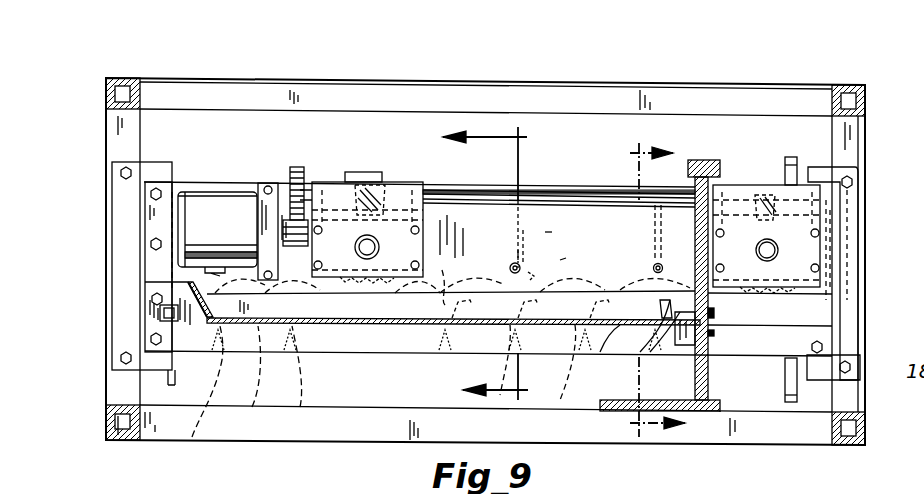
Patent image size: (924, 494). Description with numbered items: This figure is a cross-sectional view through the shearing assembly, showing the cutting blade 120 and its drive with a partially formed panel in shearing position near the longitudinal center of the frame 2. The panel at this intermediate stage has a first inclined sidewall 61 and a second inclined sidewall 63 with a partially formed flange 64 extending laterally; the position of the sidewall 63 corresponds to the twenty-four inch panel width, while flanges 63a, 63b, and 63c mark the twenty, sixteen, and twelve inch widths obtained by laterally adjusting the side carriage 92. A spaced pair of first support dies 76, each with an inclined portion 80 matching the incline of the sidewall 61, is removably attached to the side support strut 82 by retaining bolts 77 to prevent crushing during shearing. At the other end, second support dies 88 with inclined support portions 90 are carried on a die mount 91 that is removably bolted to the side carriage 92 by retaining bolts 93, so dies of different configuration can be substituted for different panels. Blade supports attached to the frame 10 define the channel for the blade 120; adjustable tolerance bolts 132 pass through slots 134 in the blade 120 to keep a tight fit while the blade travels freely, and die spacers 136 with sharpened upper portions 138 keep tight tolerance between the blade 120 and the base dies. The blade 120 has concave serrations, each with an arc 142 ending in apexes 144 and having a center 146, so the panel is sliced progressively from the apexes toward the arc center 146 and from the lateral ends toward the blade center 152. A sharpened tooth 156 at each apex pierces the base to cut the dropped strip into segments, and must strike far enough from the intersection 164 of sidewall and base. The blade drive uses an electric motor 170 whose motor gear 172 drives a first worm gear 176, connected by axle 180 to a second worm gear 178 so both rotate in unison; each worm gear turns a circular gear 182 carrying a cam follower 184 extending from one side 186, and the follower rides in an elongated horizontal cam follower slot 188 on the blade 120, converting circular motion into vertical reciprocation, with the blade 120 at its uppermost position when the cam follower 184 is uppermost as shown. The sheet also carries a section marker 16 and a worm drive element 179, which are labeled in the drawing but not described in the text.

The frame 2 is at (832, 167).
The frame 10 is at (467, 263).
The section line 16 is at (675, 285).
The first inclined sidewall 61 is at (178, 310).
The second inclined sidewall 63 is at (598, 352).
The flange 63a is at (578, 400).
The flange 63b is at (520, 400).
The flange 63c is at (510, 330).
The partially formed flange 64 is at (652, 284).
The first support dies 76 is at (157, 283).
The retaining bolts 77 is at (152, 298).
The inclined portion 80 is at (207, 318).
The side support strut 82 is at (135, 185).
The second support dies 88 is at (684, 347).
The inclined support portion 90 is at (708, 358).
The die mount 91 is at (712, 318).
The side carriage 92 is at (710, 160).
The retaining bolts 93 is at (708, 313).
The cutting blade 120 is at (548, 232).
The adjustable tolerance bolts 132 is at (515, 262).
The slots 134 is at (518, 262).
The die spacers 136 is at (184, 452).
The sharpened upper portion 138 is at (297, 418).
The arc 142 is at (442, 270).
The apex 144 is at (520, 266).
The arc center 146 is at (567, 258).
The center of the blade 152 is at (427, 293).
The sharpened tooth 156 is at (591, 280).
The intersection 164 is at (600, 352).
The electric motor 170 is at (195, 198).
The motor gear 172 is at (264, 200).
The first worm gear 176 is at (347, 178).
The second worm gear 178 is at (753, 200).
The worm 179 is at (300, 165).
The axle 180 is at (465, 195).
The circular gear 182 is at (803, 290).
The cam follower 184 is at (368, 235).
The side of the gear 186 is at (787, 258).
The cam follower slot 188 is at (388, 200).